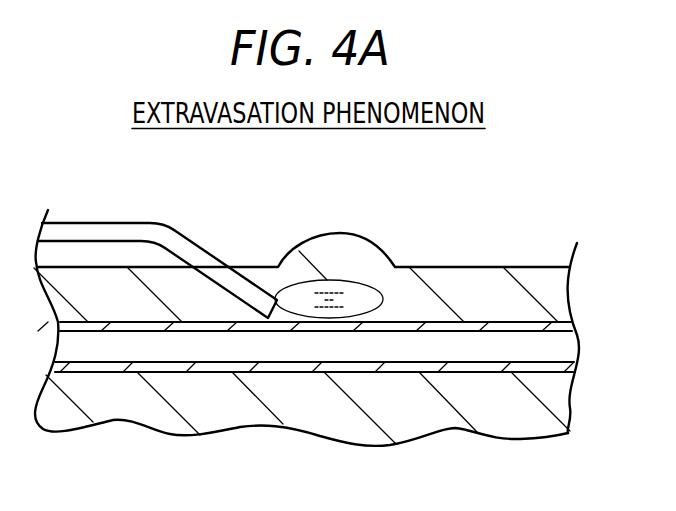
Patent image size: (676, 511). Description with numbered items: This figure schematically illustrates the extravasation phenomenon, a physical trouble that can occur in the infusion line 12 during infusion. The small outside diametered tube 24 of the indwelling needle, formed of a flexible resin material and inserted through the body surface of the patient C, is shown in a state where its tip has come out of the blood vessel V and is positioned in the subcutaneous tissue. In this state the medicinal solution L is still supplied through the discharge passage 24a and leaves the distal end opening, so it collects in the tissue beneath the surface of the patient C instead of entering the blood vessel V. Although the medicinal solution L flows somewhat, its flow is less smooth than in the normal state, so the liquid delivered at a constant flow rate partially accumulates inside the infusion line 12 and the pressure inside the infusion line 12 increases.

The small outside diametered tube 24 is at (157, 246).
The infusion line 12 is at (157, 246).
The discharge passage 24a is at (183, 249).
The medicinal solution L is at (338, 290).
The patient C is at (441, 261).
The blood vessel V is at (398, 373).